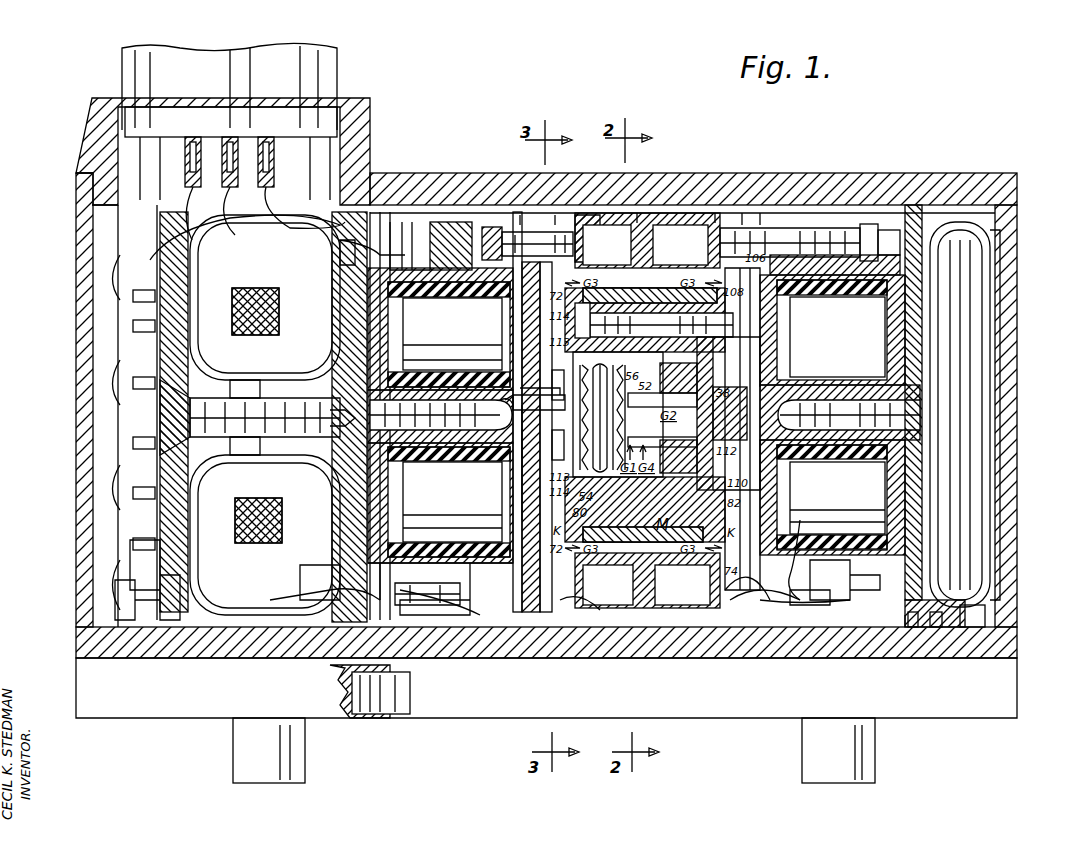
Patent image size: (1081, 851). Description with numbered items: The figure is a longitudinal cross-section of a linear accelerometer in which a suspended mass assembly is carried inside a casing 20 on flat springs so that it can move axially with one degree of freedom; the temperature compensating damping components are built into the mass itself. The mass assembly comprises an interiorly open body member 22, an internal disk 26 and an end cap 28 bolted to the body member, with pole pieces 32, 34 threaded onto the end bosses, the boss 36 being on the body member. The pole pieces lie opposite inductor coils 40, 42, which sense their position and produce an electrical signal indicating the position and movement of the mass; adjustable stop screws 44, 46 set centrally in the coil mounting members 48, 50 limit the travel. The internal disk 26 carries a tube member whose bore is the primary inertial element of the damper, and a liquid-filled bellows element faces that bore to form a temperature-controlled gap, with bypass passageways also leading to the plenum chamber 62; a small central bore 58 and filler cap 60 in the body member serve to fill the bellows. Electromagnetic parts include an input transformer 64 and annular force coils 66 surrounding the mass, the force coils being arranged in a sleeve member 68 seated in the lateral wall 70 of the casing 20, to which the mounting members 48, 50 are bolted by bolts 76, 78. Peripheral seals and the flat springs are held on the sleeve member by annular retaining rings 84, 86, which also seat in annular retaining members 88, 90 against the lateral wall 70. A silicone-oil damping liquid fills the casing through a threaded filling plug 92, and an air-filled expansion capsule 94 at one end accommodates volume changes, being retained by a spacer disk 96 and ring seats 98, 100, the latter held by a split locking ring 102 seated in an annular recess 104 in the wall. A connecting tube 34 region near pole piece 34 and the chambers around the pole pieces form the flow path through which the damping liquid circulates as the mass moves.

The casing 20 is at (795, 180).
The body member 22 is at (649, 320).
The internal disk 26 is at (670, 413).
The end cap 28 is at (736, 413).
The pole piece 32 is at (522, 316).
The pole piece 34 is at (770, 495).
The threaded end boss 36 is at (560, 385).
The inductor coil 40 is at (440, 329).
The inductor coil 42 is at (832, 330).
The adjustable stop screw 44 is at (440, 416).
The adjustable stop screw 46 is at (840, 412).
The inductor coil mounting member 48 is at (431, 246).
The inductor coil mounting member 50 is at (835, 265).
The central bore 58 is at (562, 445).
The filler cap 60 is at (507, 397).
The plenum chamber 62 is at (618, 414).
The input transformer 64 is at (265, 297).
The force coils 66 is at (647, 240).
The sleeve member 68 is at (637, 213).
The lateral wall 70 is at (715, 213).
The bolt 76 is at (541, 238).
The bolt 78 is at (810, 242).
The annular retaining ring 84 is at (520, 215).
The annular retaining ring 86 is at (760, 213).
The annular retaining member 88 is at (555, 215).
The annular retaining member 90 is at (742, 213).
The threaded filling plug 92 is at (380, 700).
The expansion capsule 94 is at (970, 407).
The spacer disk 96 is at (998, 570).
The ring seat 98 is at (972, 627).
The ring seat 100 is at (936, 627).
The split locking ring 102 is at (913, 627).
The annular recess 104 is at (905, 627).